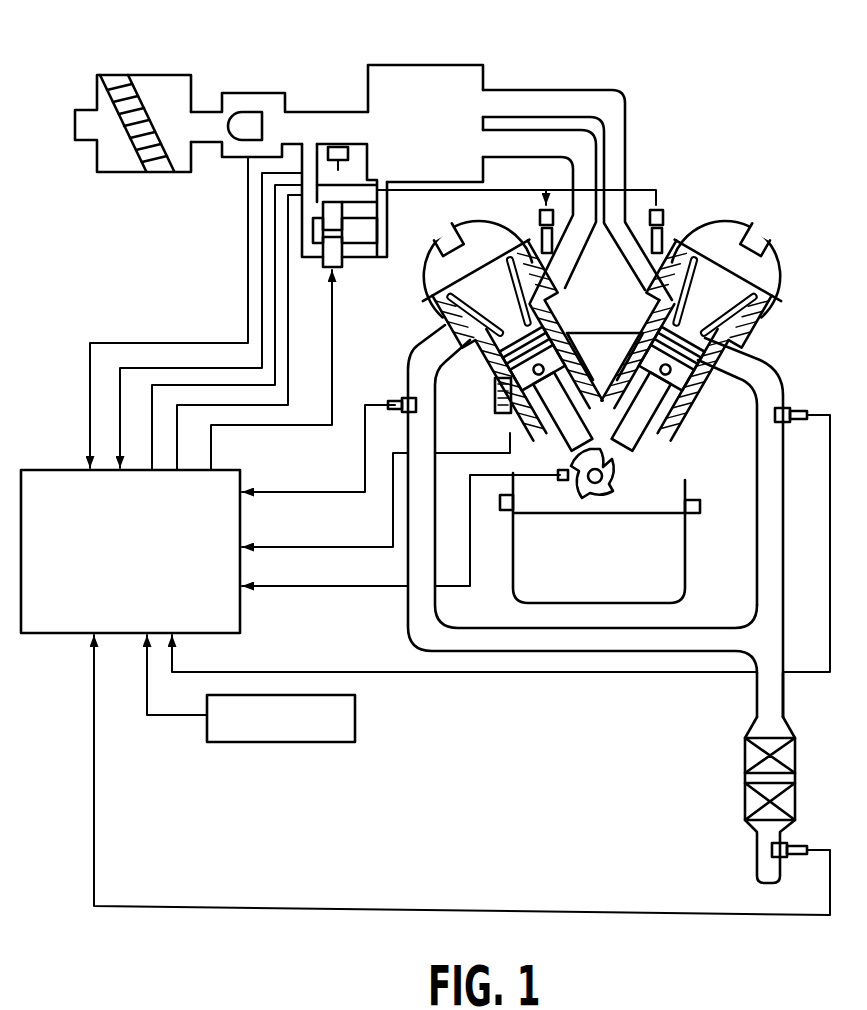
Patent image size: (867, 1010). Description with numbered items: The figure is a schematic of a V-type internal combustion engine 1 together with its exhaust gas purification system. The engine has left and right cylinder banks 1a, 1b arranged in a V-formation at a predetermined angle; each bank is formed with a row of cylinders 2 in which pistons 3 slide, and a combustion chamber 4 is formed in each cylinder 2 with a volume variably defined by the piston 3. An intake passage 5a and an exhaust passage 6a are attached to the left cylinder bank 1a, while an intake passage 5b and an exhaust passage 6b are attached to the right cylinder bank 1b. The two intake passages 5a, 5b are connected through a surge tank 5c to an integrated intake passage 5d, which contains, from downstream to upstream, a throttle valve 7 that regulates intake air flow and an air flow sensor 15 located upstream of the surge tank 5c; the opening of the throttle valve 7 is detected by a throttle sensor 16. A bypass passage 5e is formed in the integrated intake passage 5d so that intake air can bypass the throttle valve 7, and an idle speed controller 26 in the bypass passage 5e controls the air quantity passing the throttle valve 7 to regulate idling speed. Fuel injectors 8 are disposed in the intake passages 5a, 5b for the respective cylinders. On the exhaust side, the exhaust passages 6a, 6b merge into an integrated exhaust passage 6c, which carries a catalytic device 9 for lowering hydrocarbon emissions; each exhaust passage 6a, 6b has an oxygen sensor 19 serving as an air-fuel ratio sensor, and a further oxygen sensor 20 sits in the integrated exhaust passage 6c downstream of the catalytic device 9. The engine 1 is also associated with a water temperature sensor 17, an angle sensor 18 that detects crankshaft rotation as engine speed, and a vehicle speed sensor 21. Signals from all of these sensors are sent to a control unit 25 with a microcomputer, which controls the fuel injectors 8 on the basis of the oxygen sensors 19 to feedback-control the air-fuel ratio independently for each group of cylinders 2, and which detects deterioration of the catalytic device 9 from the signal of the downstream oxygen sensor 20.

The engine 1 is at (681, 204).
The left cylinder bank 1a is at (458, 240).
The right cylinder bank 1b is at (771, 250).
The cylinder 2 is at (684, 374).
The piston 3 is at (678, 428).
The combustion chamber 4 is at (672, 359).
The intake passage 5a is at (530, 140).
The intake passage 5b is at (602, 105).
The surge tank 5c is at (433, 77).
The integrated intake passage 5d is at (306, 120).
The bypass passage 5e is at (304, 242).
The exhaust passage 6a is at (426, 618).
The exhaust passage 6b is at (773, 562).
The integrated exhaust passage 6c is at (774, 700).
The throttle valve 7 is at (334, 138).
The fuel injector 8 is at (664, 226).
The catalytic device 9 is at (744, 764).
The air flow sensor 15 is at (233, 163).
The throttle sensor 16 is at (348, 152).
The water temperature sensor 17 is at (505, 430).
The angle sensor 18 is at (563, 483).
The oxygen sensor 19 is at (396, 403).
The oxygen sensor 20 is at (801, 844).
The vehicle speed sensor 21 is at (357, 718).
The control unit 25 is at (232, 470).
The idle speed controller 26 is at (343, 270).